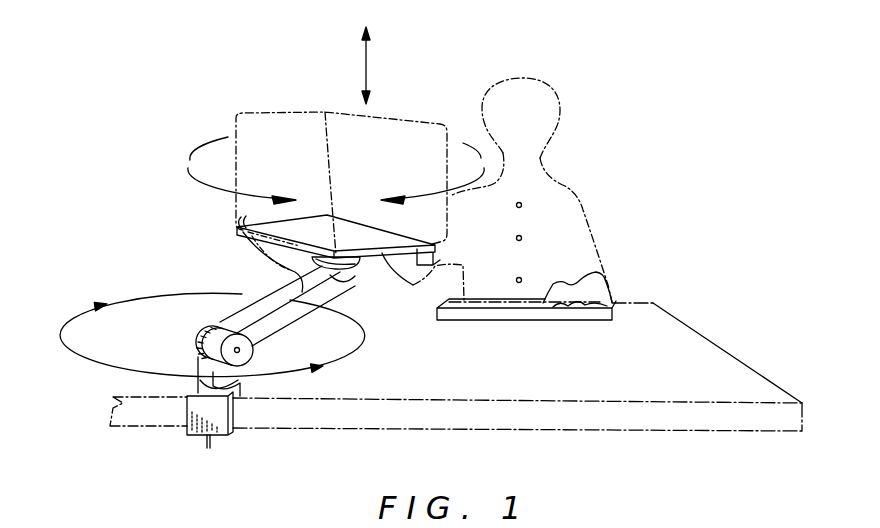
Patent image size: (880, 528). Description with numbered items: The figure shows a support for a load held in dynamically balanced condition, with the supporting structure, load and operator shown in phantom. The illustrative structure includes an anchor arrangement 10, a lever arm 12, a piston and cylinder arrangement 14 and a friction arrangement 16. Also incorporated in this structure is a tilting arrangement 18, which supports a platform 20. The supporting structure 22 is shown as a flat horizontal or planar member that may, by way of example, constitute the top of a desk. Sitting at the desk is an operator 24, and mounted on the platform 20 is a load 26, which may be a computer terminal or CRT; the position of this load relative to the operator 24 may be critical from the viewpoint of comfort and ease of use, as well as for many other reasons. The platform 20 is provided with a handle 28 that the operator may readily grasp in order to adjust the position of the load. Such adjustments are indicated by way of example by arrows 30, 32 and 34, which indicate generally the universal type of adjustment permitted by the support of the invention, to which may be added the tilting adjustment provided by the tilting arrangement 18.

The base clamp 10 is at (216, 408).
The support member 12 is at (292, 300).
The arm 14 is at (265, 335).
The pivot joint 16 is at (199, 347).
The swivel pad 18 is at (364, 262).
The platform 20 is at (372, 235).
The table 22 is at (696, 365).
The operator 24 is at (565, 198).
The display unit 26 is at (255, 113).
The stop clip 28 is at (437, 252).
The rotation arrow 30 is at (190, 163).
The vertical adjustment arrow 32 is at (368, 70).
The arm rotation arrow 34 is at (205, 292).